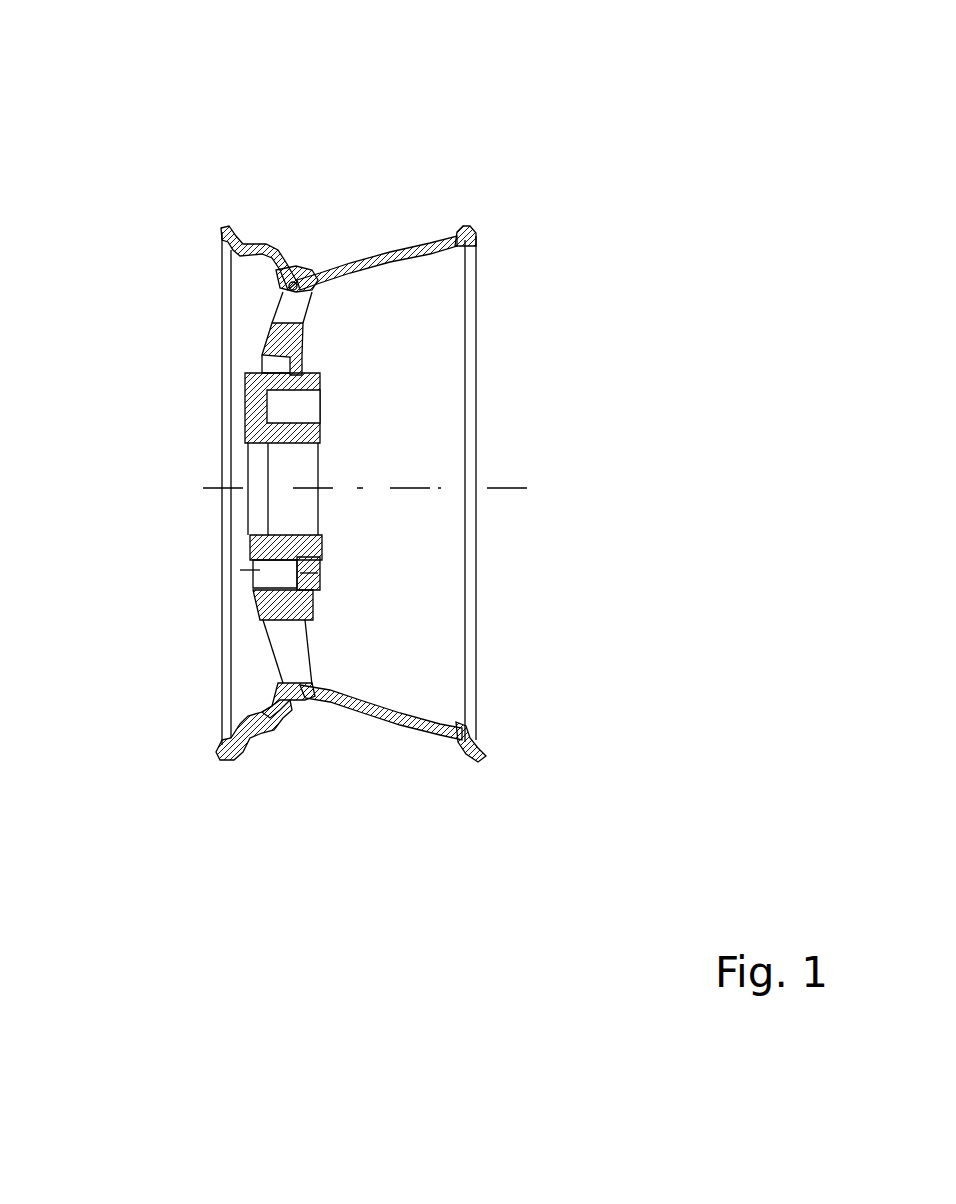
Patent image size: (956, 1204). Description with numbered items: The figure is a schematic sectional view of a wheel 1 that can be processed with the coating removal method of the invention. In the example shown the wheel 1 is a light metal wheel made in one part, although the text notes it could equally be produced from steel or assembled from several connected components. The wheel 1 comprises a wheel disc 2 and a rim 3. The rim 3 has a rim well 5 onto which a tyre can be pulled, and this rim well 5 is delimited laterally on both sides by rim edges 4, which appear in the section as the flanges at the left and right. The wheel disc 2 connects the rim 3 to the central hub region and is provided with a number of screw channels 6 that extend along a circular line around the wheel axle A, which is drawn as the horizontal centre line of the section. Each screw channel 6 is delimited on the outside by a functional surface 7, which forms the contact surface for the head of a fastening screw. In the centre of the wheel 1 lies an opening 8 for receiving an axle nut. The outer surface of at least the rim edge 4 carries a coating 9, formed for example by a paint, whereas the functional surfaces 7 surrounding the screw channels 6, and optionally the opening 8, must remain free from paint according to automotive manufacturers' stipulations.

The wheel 1 is at (470, 122).
The wheel disc 2 is at (288, 312).
The rim 3 is at (378, 250).
The rim edge 4 is at (223, 225).
The rim well 5 is at (345, 262).
The screw channel 6 is at (323, 573).
The functional surface 7 is at (273, 560).
The opening 8 is at (257, 460).
The coating 9 is at (253, 608).
The wheel axle A is at (512, 487).